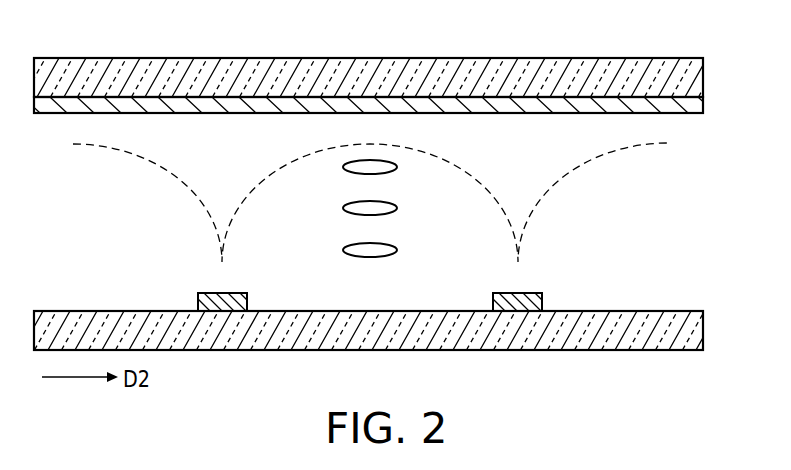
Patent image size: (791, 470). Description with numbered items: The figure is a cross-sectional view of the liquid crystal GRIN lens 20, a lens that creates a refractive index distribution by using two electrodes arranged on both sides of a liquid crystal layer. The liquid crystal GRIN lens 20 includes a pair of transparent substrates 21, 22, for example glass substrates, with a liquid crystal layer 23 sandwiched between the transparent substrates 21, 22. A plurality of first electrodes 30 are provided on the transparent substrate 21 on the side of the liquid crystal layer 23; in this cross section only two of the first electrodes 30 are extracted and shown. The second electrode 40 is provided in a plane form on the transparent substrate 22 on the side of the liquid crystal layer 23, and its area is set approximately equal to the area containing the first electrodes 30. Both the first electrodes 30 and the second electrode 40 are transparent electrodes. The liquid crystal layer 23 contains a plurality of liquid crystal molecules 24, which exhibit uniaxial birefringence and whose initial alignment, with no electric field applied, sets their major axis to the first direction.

The liquid crystal GRIN lens 20 is at (386, 32).
The transparent substrate 21 is at (705, 319).
The transparent substrate 22 is at (707, 66).
The liquid crystal layer 23 is at (708, 120).
The liquid crystal molecules 24 is at (398, 250).
The first electrodes 30 is at (249, 301).
The second electrode 40 is at (707, 103).